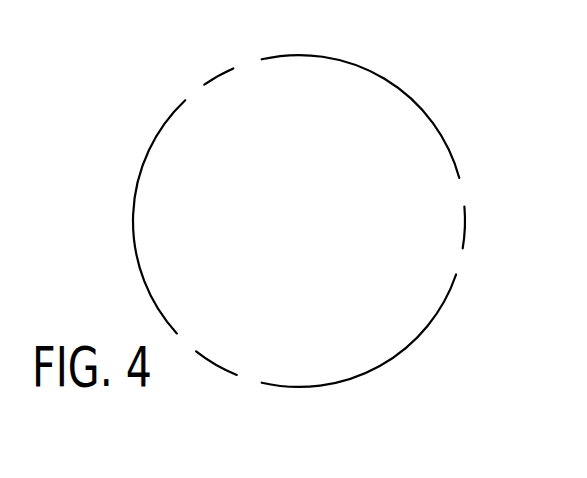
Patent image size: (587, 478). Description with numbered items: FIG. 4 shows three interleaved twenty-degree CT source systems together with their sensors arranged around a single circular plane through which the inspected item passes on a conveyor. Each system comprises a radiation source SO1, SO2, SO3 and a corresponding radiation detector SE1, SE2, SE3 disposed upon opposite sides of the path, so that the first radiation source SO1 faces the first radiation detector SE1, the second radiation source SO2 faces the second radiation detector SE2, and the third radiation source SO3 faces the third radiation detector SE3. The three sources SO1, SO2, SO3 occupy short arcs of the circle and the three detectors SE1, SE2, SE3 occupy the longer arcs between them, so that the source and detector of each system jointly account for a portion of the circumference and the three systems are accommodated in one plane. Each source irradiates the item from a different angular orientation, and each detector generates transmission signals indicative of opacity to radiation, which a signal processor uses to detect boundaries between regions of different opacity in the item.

The radiation detector SE1 is at (361, 115).
The radiation detector SE2 is at (136, 216).
The radiation detector SE3 is at (359, 341).
The radiation source SO1 is at (208, 374).
The radiation source SO2 is at (487, 228).
The radiation source SO3 is at (203, 67).